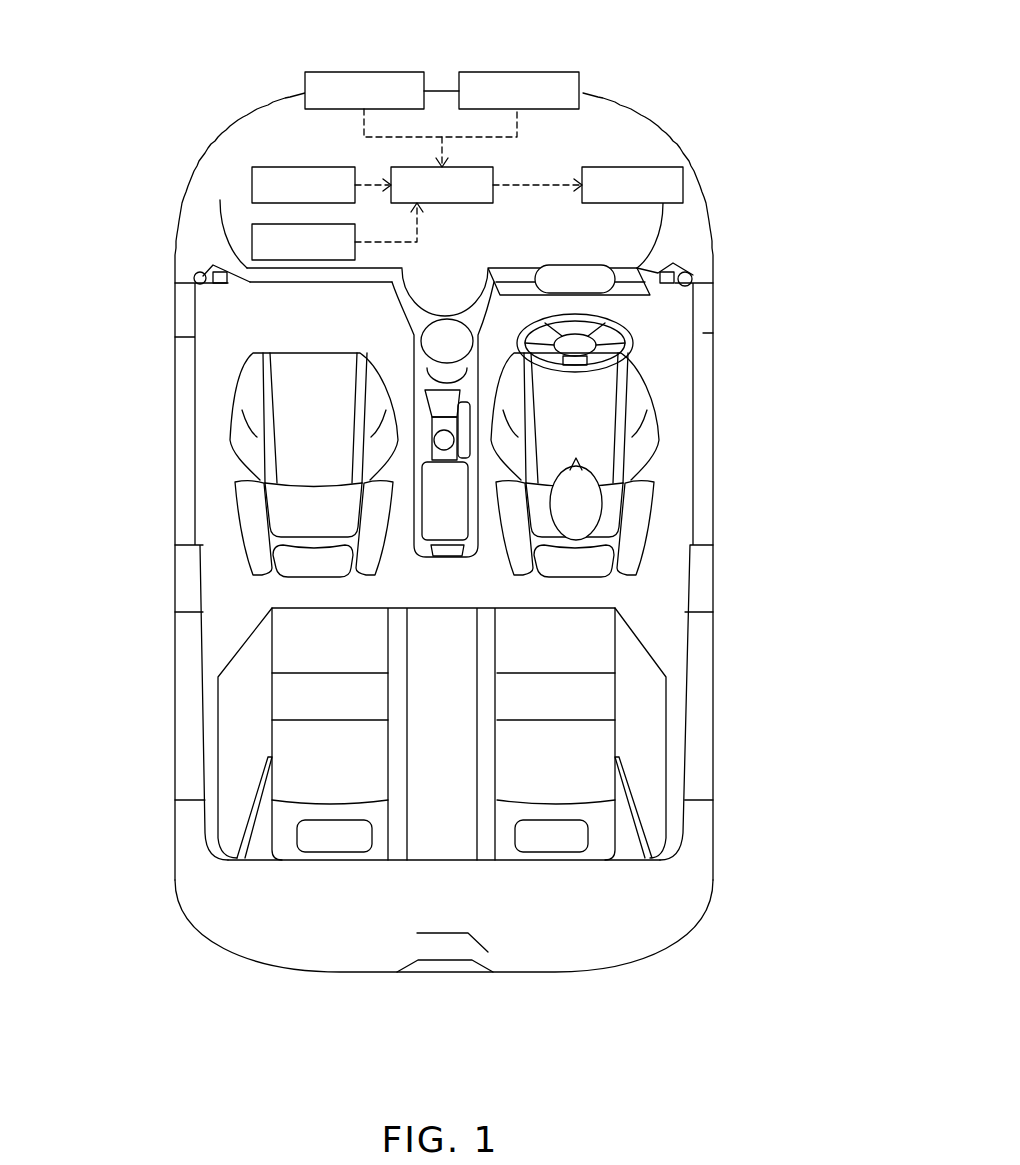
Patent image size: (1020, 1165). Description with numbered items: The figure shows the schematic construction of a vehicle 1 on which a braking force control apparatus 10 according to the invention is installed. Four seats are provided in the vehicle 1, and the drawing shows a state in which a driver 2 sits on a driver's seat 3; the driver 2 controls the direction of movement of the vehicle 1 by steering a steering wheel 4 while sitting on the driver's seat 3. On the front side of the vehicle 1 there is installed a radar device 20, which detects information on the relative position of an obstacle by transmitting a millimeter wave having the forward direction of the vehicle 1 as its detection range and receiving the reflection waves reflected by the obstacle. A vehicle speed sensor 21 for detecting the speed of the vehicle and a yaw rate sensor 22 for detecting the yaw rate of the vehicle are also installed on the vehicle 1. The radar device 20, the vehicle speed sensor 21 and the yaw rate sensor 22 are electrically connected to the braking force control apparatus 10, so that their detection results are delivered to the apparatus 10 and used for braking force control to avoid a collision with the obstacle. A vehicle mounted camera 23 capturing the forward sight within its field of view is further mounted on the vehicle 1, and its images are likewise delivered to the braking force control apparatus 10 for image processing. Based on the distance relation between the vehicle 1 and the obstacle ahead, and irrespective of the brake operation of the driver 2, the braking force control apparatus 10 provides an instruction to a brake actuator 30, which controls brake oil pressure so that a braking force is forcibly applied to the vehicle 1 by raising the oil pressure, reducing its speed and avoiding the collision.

The vehicle 1 is at (124, 804).
The driver 2 is at (590, 520).
The driver's seat 3 is at (608, 395).
The steering wheel 4 is at (623, 322).
The braking force control apparatus 10 is at (475, 203).
The radar device 20 is at (352, 72).
The vehicle speed sensor 21 is at (287, 167).
The yaw rate sensor 22 is at (252, 242).
The vehicle mounted camera 23 is at (505, 72).
The brake actuator 30 is at (640, 167).